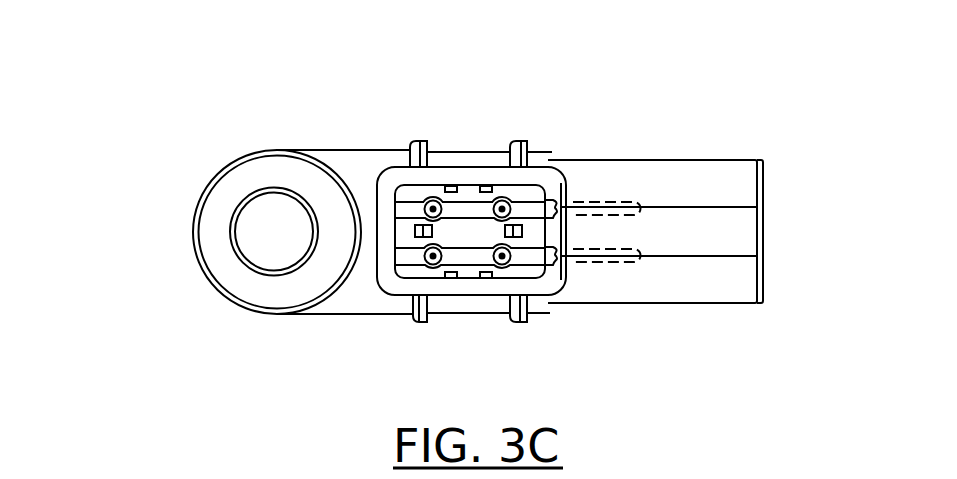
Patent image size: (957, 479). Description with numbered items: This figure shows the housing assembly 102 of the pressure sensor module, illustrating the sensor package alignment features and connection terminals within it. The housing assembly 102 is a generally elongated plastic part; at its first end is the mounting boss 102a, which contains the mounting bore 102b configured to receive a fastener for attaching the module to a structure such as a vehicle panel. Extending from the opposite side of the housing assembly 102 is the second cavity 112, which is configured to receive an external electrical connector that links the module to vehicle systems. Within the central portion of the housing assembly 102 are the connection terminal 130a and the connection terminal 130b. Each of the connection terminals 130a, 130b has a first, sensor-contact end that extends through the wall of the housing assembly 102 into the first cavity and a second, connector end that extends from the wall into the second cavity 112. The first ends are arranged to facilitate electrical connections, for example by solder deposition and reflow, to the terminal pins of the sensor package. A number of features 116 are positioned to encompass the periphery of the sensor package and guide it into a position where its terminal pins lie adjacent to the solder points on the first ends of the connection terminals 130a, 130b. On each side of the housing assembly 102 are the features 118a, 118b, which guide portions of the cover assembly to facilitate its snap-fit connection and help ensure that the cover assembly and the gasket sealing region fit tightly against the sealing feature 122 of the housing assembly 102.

The housing assembly 102 is at (700, 158).
The mounting boss 102a is at (257, 152).
The mounting bore 102b is at (255, 230).
The second cavity 112 is at (765, 230).
The features 116 is at (487, 185).
The feature 118a is at (434, 143).
The feature 118b is at (503, 143).
The sealing feature 122 is at (398, 178).
The connection terminal 130a is at (520, 207).
The connection terminal 130b is at (532, 257).